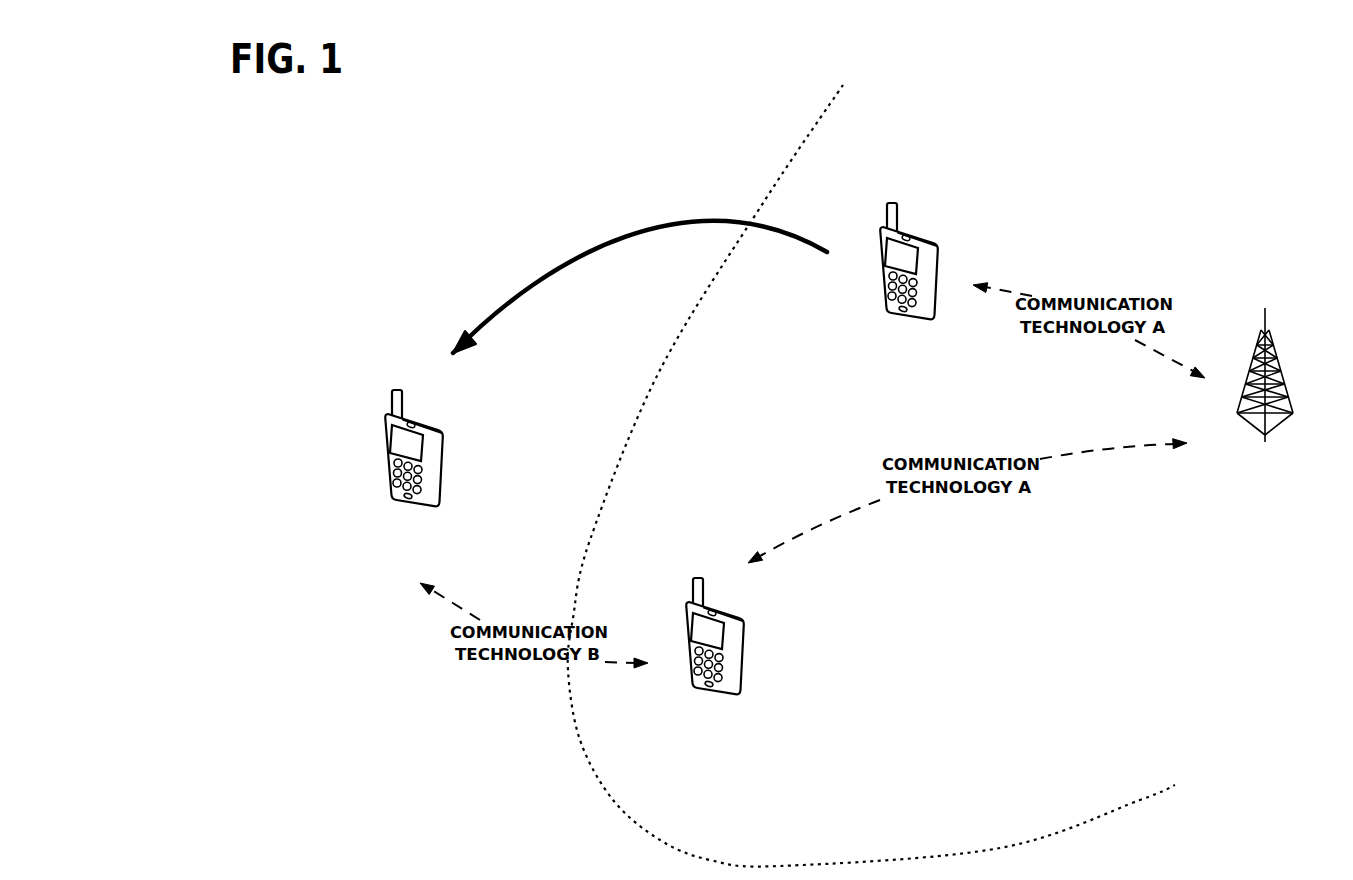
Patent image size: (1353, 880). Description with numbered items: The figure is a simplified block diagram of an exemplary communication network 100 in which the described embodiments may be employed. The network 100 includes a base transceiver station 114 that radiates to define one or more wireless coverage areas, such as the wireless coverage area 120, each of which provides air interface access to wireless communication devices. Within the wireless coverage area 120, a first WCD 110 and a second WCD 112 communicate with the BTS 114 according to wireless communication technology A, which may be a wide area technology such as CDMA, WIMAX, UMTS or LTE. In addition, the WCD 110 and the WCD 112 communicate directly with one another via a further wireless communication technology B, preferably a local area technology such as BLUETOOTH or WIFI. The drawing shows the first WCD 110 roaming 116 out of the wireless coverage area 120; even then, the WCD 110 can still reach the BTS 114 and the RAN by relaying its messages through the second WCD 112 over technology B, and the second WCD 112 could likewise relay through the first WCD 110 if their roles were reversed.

The communication network 100 is at (492, 148).
The first WCD 110 is at (392, 404).
The second WCD 112 is at (693, 595).
The base transceiver station 114 is at (1260, 337).
The roaming 116 is at (640, 287).
The wireless coverage area 120 is at (871, 476).